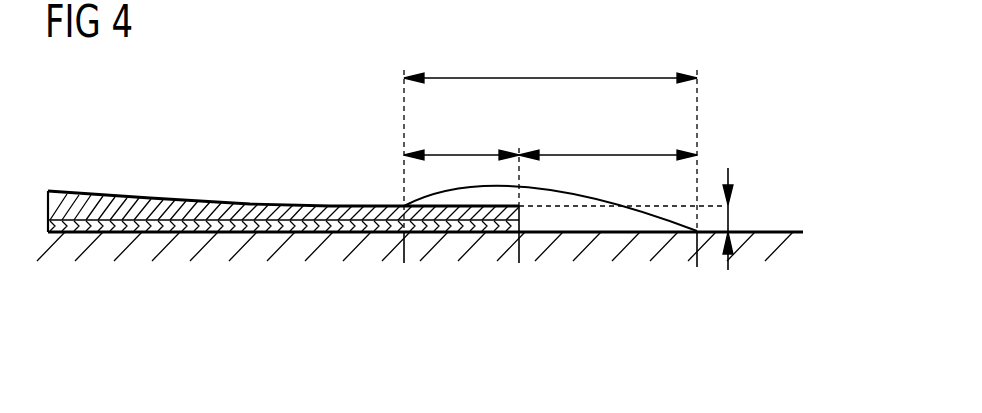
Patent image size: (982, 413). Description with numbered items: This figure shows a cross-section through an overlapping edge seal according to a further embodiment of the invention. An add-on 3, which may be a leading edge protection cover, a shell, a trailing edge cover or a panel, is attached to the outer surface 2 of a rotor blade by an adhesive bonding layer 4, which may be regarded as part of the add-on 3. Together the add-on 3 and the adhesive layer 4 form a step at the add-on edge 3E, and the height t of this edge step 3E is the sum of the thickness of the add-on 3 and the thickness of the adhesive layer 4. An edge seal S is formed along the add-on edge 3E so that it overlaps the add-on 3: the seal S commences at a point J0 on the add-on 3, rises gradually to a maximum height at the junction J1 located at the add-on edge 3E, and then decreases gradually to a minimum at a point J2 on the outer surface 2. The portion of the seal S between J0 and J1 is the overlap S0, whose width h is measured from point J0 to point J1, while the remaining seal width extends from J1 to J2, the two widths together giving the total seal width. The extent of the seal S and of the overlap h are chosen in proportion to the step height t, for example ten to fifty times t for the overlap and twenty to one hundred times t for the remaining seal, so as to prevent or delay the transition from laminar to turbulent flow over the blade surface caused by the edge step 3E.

The outer surface of the rotor blade 2 is at (784, 230).
The add-on 3 is at (257, 213).
The adhesive bonding layer 4 is at (116, 227).
The add-on edge 3E is at (506, 233).
The overlap S0 is at (455, 198).
The edge seal S is at (578, 233).
The first point J0 is at (404, 189).
The junction point J1 is at (520, 228).
The second point J2 is at (699, 189).
The width of the overlap h is at (460, 152).
The height of the edge step t is at (730, 218).